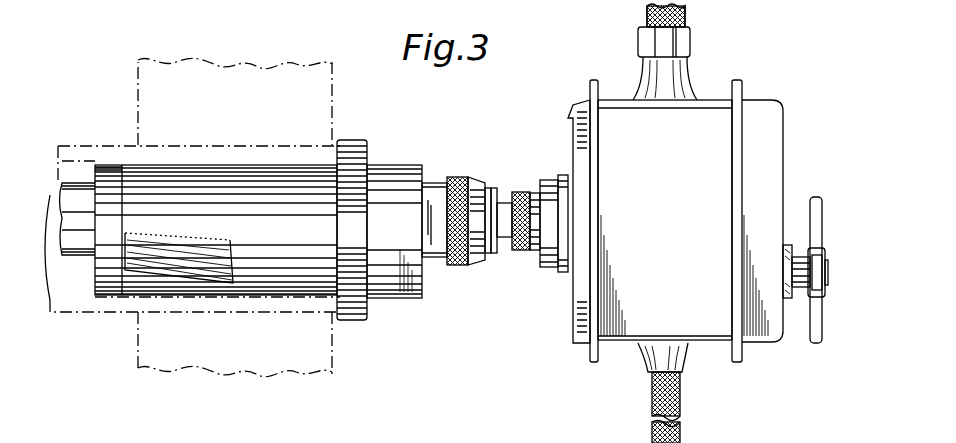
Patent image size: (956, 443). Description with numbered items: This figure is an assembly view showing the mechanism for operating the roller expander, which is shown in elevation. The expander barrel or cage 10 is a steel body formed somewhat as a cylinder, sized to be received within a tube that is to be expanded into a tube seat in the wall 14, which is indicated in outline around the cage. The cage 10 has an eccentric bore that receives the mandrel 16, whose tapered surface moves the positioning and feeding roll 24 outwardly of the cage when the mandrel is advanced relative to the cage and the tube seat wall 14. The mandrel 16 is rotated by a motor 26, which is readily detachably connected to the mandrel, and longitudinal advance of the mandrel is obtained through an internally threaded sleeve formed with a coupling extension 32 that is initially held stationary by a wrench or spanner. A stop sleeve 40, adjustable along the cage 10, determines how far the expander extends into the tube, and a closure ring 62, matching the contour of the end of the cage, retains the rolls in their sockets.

The expander barrel or cage 10 is at (248, 165).
The tube seat wall 14 is at (136, 80).
The mandrel 16 is at (81, 257).
The positioning and feeding roll 24 is at (193, 262).
The motor 26 is at (762, 100).
The coupling extension 32 is at (433, 183).
The stop sleeve 40 is at (356, 141).
The closure ring 62 is at (100, 165).